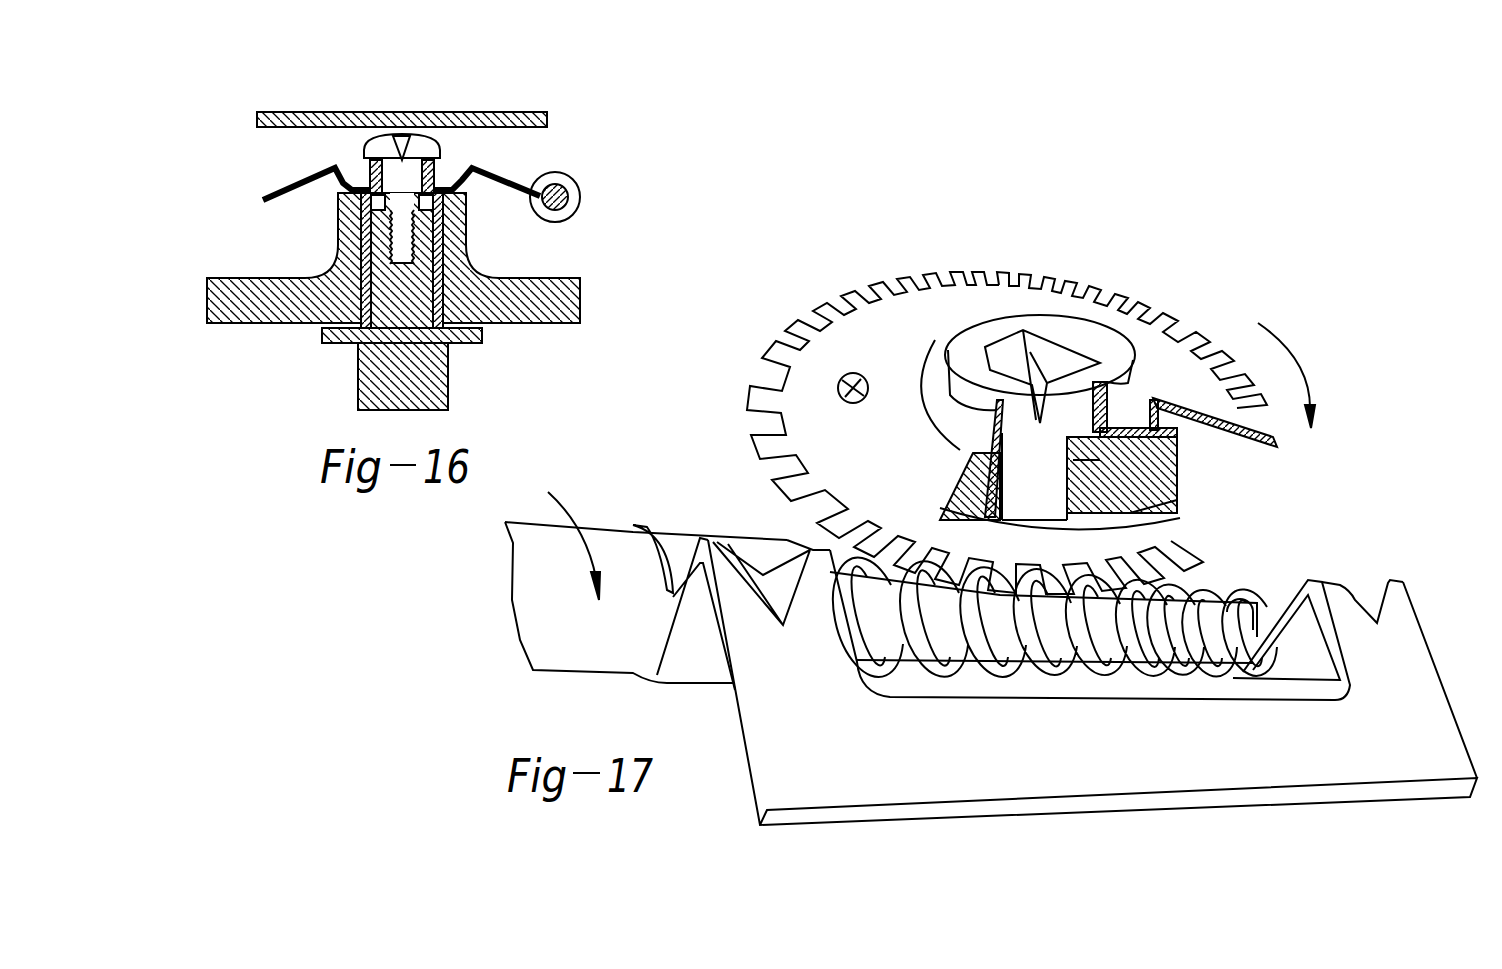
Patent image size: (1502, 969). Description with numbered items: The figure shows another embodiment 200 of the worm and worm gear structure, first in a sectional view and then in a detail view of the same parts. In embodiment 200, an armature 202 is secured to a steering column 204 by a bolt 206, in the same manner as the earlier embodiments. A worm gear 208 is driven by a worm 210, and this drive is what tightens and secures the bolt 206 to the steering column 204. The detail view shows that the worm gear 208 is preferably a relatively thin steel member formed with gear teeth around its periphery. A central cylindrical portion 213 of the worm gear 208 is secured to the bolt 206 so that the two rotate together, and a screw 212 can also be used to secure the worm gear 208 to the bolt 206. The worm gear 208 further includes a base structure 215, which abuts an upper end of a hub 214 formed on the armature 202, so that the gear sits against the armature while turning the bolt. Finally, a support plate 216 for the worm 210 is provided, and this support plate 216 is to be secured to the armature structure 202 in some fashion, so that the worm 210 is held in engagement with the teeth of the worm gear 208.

In FIG. 16, the embodiment 200 is at (200, 172).
In FIG. 16, the armature 202 is at (272, 285).
In FIG. 17, the armature 202 is at (1160, 480).
In FIG. 16, the steering column 204 is at (383, 363).
In FIG. 17, the steering column 204 is at (1087, 493).
In FIG. 16, the bolt 206 is at (378, 148).
In FIG. 17, the bolt 206 is at (988, 333).
In FIG. 16, the worm gear 208 is at (483, 167).
In FIG. 17, the worm gear 208 is at (818, 418).
In FIG. 16, the worm 210 is at (560, 183).
In FIG. 17, the worm 210 is at (1247, 620).
In FIG. 17, the screw 212 is at (842, 382).
In FIG. 17, the central cylindrical portion 213 is at (967, 417).
In FIG. 17, the hub 214 is at (1160, 457).
In FIG. 17, the base structure 215 is at (1135, 428).
In FIG. 17, the support plate 216 is at (1400, 620).